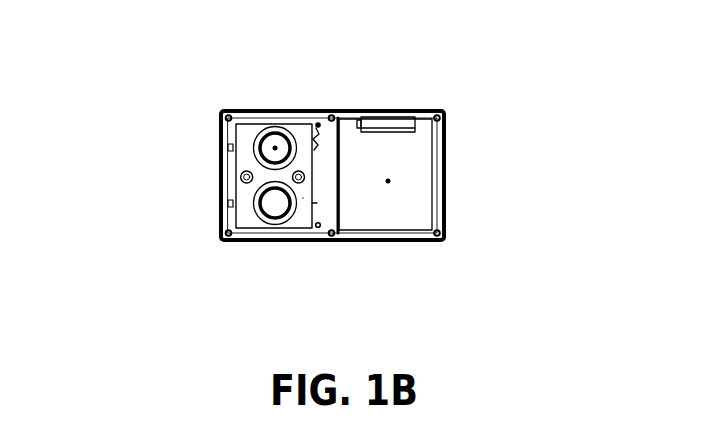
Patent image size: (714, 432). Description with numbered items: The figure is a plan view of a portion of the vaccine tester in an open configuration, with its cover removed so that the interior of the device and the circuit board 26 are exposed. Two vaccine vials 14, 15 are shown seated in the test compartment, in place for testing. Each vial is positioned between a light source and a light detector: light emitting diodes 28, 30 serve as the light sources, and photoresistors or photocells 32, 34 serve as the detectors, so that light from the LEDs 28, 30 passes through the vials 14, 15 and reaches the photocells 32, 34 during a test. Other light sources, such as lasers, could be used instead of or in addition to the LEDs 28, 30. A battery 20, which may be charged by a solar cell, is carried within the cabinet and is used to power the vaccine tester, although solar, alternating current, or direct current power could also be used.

The vaccine vial 14 is at (275, 148).
The vaccine vial 15 is at (275, 203).
The battery 20 is at (402, 125).
The circuit board 26 is at (420, 200).
The light emitting diode 28 is at (221, 155).
The light emitting diode 30 is at (221, 203).
The photocell 32 is at (318, 124).
The photocell 34 is at (303, 198).